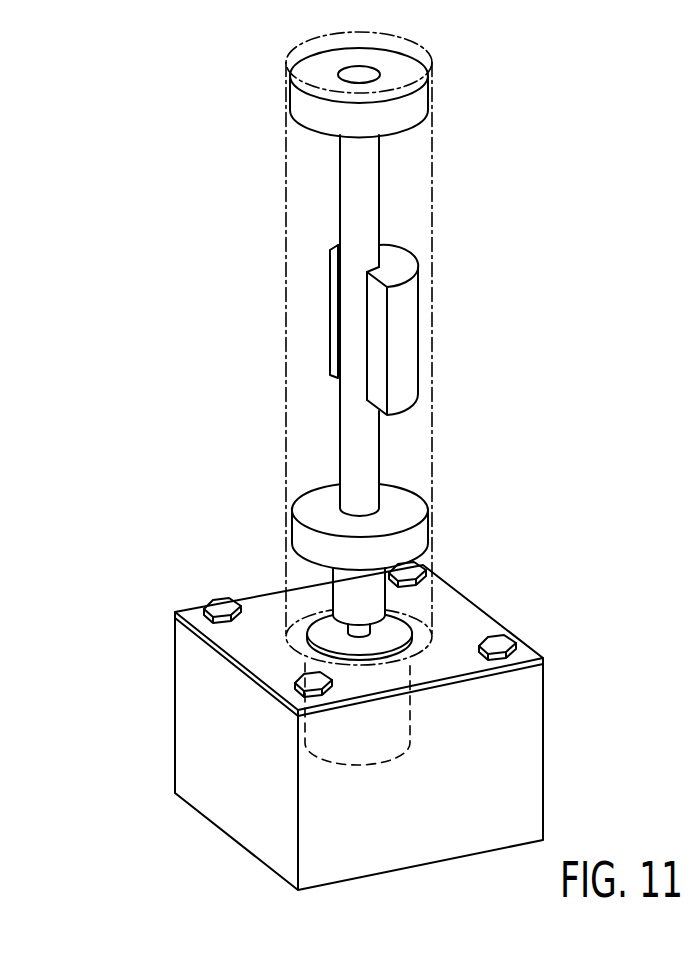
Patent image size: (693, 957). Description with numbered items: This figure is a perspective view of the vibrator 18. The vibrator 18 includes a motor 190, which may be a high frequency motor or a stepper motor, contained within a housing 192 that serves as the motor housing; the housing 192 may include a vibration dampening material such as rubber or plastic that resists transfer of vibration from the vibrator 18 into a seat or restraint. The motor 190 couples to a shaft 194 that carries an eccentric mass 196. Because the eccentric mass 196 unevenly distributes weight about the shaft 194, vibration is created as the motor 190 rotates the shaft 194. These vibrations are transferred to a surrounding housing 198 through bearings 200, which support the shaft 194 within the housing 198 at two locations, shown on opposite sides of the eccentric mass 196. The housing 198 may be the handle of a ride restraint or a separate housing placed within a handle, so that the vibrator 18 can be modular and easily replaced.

The vibrator 18 is at (207, 425).
The motor 190 is at (513, 568).
The housing 192 is at (515, 767).
The shaft 194 is at (360, 202).
The eccentric mass 196 is at (403, 346).
The housing 198 is at (285, 348).
The bearings 200 is at (413, 108).